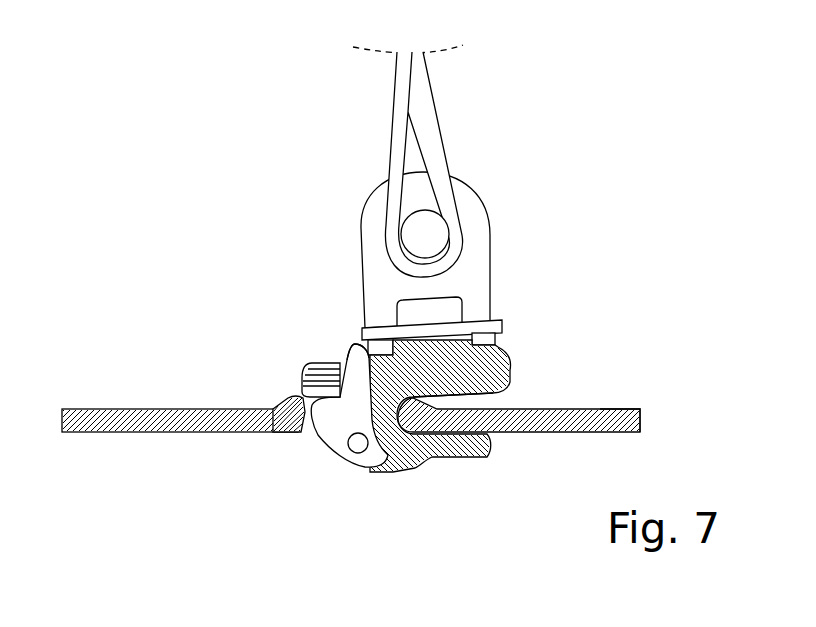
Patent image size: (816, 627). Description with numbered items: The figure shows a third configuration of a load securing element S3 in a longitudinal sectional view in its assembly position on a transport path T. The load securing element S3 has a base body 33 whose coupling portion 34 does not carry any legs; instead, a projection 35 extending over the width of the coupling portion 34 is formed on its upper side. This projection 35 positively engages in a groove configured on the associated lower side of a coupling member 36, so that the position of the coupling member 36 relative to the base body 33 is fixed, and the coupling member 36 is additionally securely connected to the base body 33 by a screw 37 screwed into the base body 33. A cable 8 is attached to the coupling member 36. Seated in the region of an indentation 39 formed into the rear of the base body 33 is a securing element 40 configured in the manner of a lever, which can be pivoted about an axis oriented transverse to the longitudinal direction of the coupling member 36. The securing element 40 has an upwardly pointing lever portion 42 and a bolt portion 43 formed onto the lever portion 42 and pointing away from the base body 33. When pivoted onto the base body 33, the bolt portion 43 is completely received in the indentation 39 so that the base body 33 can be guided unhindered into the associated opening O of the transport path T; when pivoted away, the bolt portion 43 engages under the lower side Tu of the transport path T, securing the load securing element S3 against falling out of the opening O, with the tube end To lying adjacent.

The load securing element S3 is at (243, 211).
The cable loop 8 is at (432, 150).
The coupling member 36 is at (368, 220).
The screw 37 is at (412, 317).
The projection 35 is at (478, 335).
The base body 33 is at (508, 352).
The coupling portion 34 is at (475, 395).
The indentation 39 is at (305, 383).
The lever portion 42 is at (353, 363).
The bolt portion 43 is at (287, 406).
The securing element 40 is at (348, 458).
The opening O is at (298, 434).
The lower side of the transport path Tu is at (140, 434).
The transport path T is at (548, 427).
The tube end To is at (616, 409).